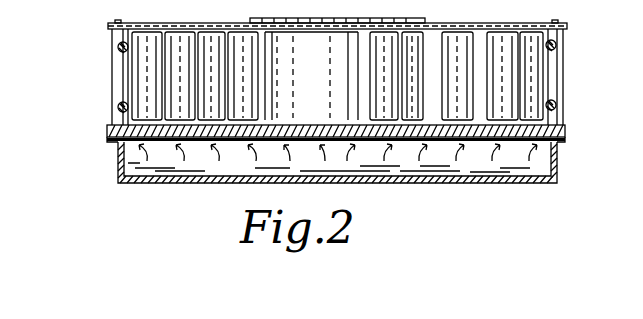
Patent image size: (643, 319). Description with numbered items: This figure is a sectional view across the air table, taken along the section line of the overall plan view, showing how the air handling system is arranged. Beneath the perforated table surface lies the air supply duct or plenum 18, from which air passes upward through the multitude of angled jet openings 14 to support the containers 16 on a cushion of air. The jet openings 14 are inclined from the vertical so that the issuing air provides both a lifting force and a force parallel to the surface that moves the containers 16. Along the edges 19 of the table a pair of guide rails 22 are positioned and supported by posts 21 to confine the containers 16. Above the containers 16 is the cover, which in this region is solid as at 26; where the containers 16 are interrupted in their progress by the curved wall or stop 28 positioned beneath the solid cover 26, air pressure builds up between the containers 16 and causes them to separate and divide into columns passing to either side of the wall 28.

The openings 14 is at (155, 139).
The containers 16 is at (177, 43).
The air supply duct or plenum 18 is at (503, 165).
The edges 19 is at (107, 131).
The posts 21 is at (115, 79).
The guide rails 22 is at (118, 47).
The solid cover portion 26 is at (320, 20).
The curved wall or stop 28 is at (337, 78).